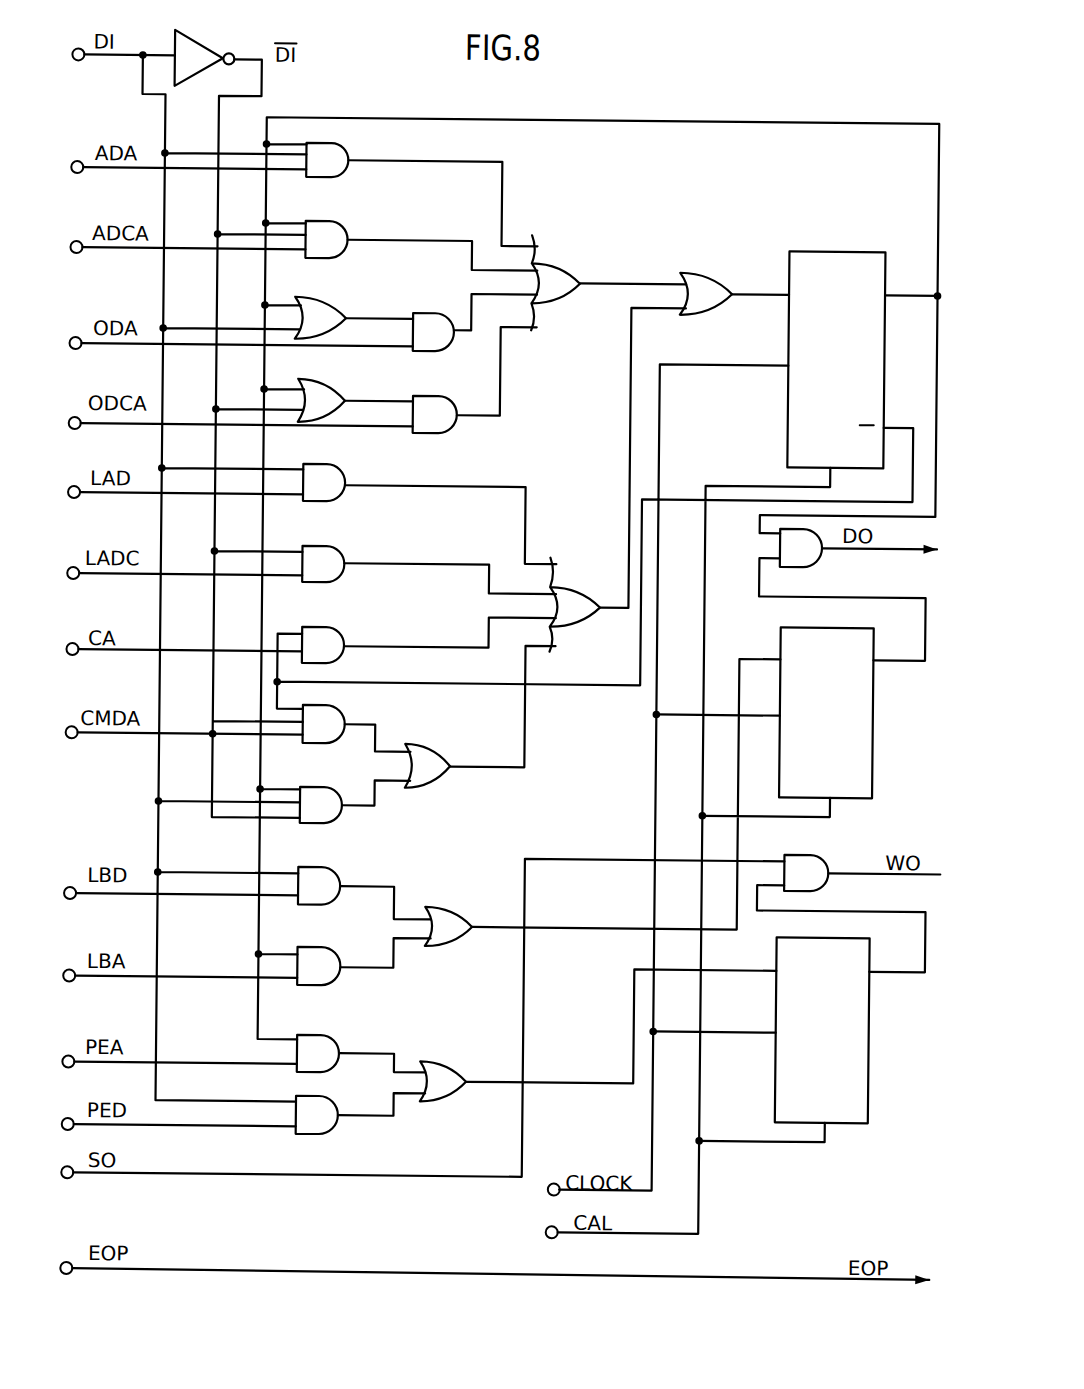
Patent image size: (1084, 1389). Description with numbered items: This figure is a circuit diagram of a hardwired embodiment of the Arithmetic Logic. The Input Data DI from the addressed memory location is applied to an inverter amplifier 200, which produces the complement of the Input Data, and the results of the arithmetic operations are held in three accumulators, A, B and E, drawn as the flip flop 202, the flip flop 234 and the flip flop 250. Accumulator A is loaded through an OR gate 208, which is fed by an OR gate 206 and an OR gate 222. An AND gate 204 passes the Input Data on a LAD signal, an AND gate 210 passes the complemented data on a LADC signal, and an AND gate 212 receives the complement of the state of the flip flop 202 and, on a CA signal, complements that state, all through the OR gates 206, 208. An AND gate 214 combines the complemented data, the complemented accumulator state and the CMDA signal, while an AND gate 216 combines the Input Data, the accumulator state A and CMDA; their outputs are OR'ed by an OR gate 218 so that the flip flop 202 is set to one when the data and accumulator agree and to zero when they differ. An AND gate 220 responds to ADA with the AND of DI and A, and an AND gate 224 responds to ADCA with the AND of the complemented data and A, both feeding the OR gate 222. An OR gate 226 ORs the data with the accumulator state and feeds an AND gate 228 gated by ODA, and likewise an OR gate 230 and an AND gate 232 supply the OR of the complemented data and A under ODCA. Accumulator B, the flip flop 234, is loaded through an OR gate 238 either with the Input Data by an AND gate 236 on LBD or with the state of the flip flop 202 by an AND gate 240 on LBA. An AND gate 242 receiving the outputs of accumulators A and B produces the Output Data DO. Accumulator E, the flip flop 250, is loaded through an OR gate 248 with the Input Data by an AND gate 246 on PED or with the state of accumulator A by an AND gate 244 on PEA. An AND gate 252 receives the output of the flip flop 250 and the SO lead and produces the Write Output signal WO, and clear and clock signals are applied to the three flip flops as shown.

The inverter amplifier 200 is at (191, 43).
The flip flop 202 is at (818, 249).
The AND gate 204 is at (342, 466).
The OR gate 206 is at (564, 587).
The OR gate 208 is at (700, 272).
The AND gate 210 is at (342, 548).
The AND gate 212 is at (342, 629).
The AND gate 214 is at (343, 708).
The AND gate 216 is at (321, 790).
The OR gate 218 is at (436, 746).
The AND gate 220 is at (340, 145).
The OR gate 222 is at (550, 263).
The AND gate 224 is at (340, 223).
The OR gate 226 is at (324, 299).
The AND gate 228 is at (421, 314).
The OR gate 230 is at (330, 382).
The AND gate 232 is at (427, 397).
The flip flop 234 is at (873, 775).
The AND gate 236 is at (332, 869).
The OR gate 238 is at (445, 908).
The AND gate 240 is at (328, 987).
The AND gate 242 is at (814, 564).
The AND gate 244 is at (338, 1038).
The AND gate 246 is at (330, 1136).
The OR gate 248 is at (448, 1062).
The flip flop 250 is at (872, 1055).
The AND gate 252 is at (816, 852).